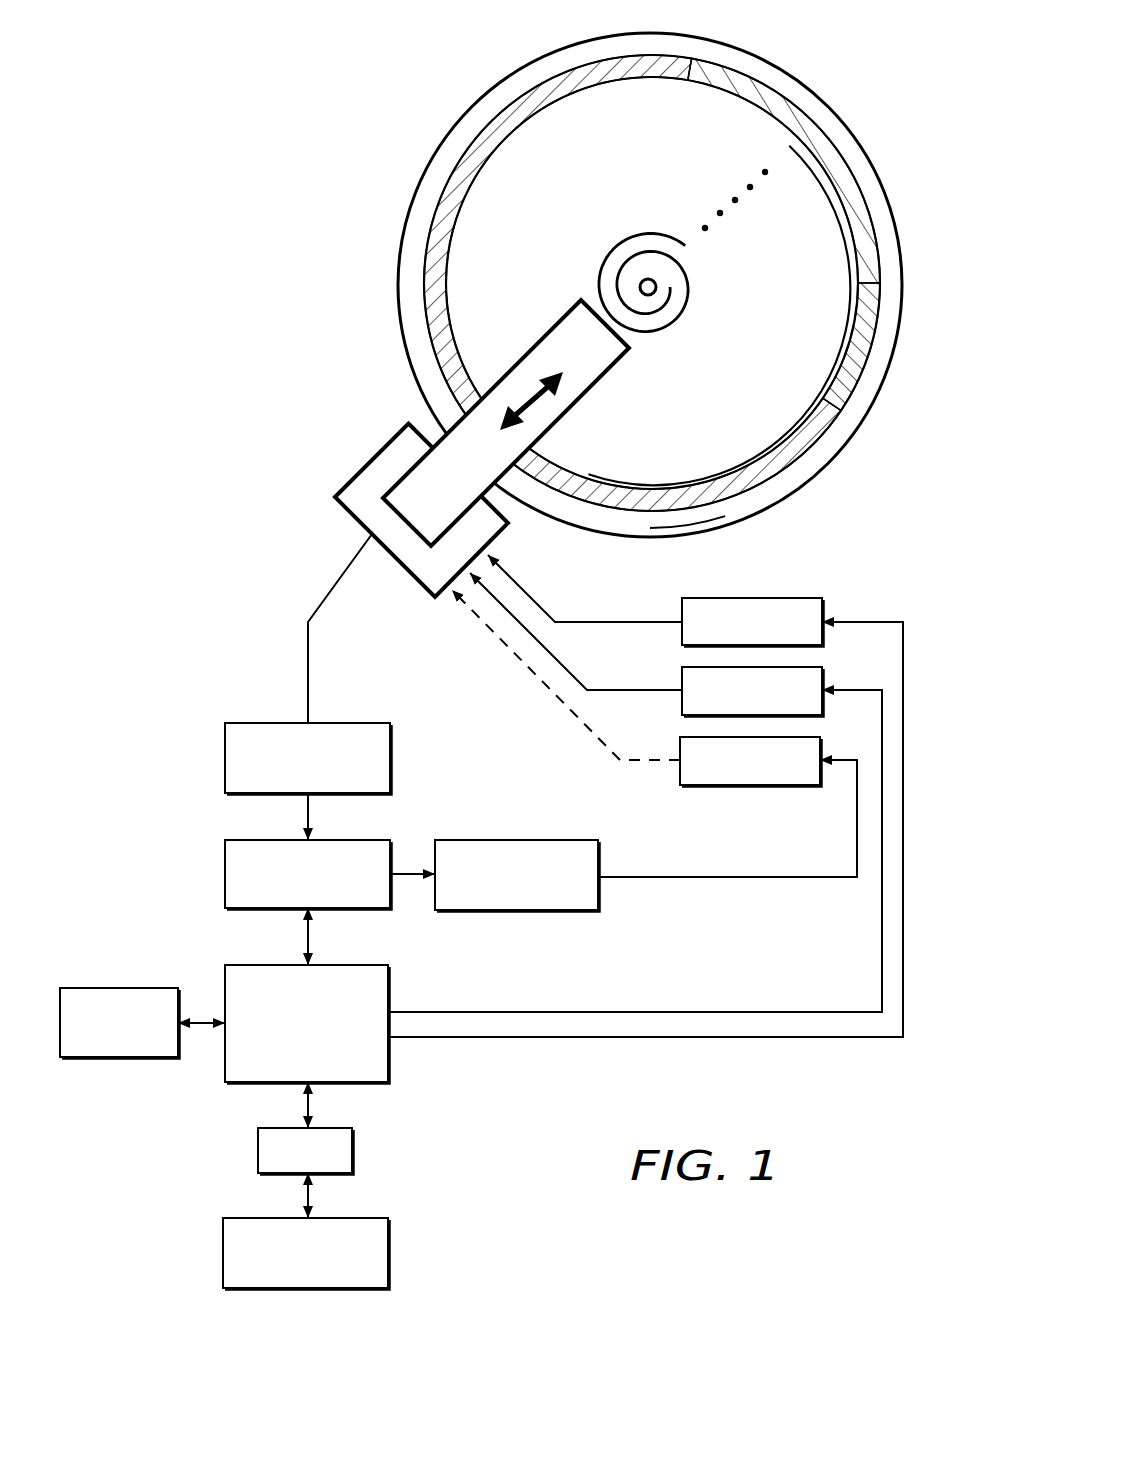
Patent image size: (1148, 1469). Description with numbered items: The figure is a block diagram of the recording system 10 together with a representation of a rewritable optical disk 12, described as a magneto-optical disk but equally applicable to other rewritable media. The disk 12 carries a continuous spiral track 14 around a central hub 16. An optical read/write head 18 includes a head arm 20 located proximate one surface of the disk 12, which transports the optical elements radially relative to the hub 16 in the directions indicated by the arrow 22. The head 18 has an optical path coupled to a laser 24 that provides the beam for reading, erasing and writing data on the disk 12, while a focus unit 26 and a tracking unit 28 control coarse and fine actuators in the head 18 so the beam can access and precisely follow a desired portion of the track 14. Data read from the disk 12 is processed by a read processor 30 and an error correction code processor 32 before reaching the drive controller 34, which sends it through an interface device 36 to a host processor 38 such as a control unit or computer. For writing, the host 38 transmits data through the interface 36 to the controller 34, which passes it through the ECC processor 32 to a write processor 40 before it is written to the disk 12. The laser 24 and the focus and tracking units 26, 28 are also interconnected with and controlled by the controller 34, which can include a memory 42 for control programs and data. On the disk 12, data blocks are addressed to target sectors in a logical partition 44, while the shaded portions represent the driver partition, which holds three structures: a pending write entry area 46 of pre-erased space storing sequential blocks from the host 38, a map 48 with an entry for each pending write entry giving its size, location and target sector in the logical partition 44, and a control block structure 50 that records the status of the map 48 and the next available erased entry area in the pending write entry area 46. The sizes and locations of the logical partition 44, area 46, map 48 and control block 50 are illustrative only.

The recording system 10 is at (162, 290).
The rewritable optical disk 12 is at (757, 55).
The spiral track 14 is at (618, 248).
The central hub 16 is at (652, 290).
The optical read/write head 18 is at (365, 462).
The head arm 20 is at (543, 340).
The arrow 22 is at (545, 400).
The laser 24 is at (755, 787).
The focus unit 26 is at (823, 675).
The tracking unit 28 is at (823, 605).
The read processor 30 is at (225, 758).
The error correction code (ECC) processor 32 is at (225, 880).
The drive controller 34 is at (390, 1065).
The interface device 36 is at (258, 1147).
The host processor 38 is at (223, 1252).
The write processor 40 is at (517, 840).
The memory 42 is at (120, 987).
The logical partition 44 is at (490, 192).
The pending write entry (PWE) area 46 is at (547, 83).
The map 48 is at (822, 138).
The control block structure 50 is at (880, 325).